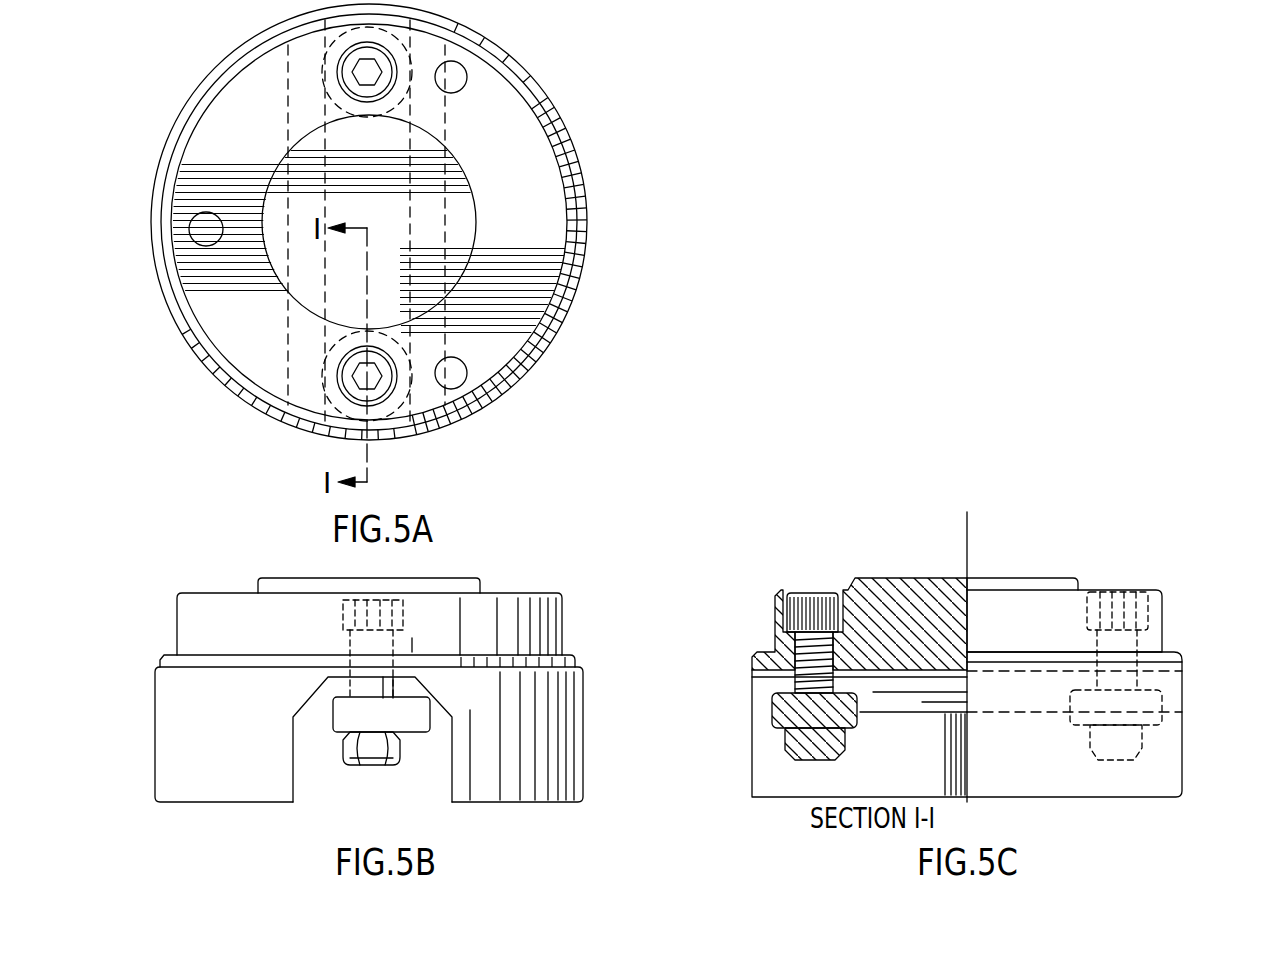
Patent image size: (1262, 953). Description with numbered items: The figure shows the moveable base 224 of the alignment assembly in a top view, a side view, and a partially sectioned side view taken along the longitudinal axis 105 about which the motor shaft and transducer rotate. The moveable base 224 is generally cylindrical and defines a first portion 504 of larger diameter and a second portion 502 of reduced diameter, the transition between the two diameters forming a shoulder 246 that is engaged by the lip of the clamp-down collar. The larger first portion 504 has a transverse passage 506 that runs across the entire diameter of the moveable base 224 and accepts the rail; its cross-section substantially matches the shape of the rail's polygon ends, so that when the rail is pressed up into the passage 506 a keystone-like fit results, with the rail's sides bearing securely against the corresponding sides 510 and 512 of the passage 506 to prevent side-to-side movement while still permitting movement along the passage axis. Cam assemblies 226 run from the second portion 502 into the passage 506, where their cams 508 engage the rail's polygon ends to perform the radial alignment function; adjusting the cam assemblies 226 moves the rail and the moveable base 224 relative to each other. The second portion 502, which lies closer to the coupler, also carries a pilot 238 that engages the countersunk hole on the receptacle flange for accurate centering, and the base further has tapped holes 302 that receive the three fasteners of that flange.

In FIG. 5C, the longitudinal axis 105 is at (966, 640).
In FIG. 5A, the moveable base 224 is at (426, 222).
In FIG. 5B, the moveable base 224 is at (352, 659).
In FIG. 5C, the moveable base 224 is at (958, 640).
In FIG. 5B, the cam assemblies 226 is at (358, 767).
In FIG. 5C, the cam assemblies 226 is at (825, 590).
In FIG. 5A, the pilot 238 is at (476, 187).
In FIG. 5B, the pilot 238 is at (472, 576).
In FIG. 5C, the pilot 238 is at (1053, 575).
In FIG. 5B, the shoulder 246 is at (168, 650).
In FIG. 5C, the shoulder 246 is at (1074, 657).
In FIG. 5A, the tapped holes 302 is at (467, 80).
In FIG. 5A, the second portion 502 is at (575, 265).
In FIG. 5B, the second portion 502 is at (176, 622).
In FIG. 5C, the second portion 502 is at (957, 624).
In FIG. 5A, the first portion 504 is at (572, 298).
In FIG. 5B, the first portion 504 is at (330, 717).
In FIG. 5C, the first portion 504 is at (967, 729).
In FIG. 5B, the transverse passage 506 is at (324, 752).
In FIG. 5B, the cams 508 is at (408, 734).
In FIG. 5C, the cams 508 is at (772, 695).
In FIG. 5B, the side of passage 510 is at (312, 716).
In FIG. 5B, the side of passage 512 is at (445, 725).